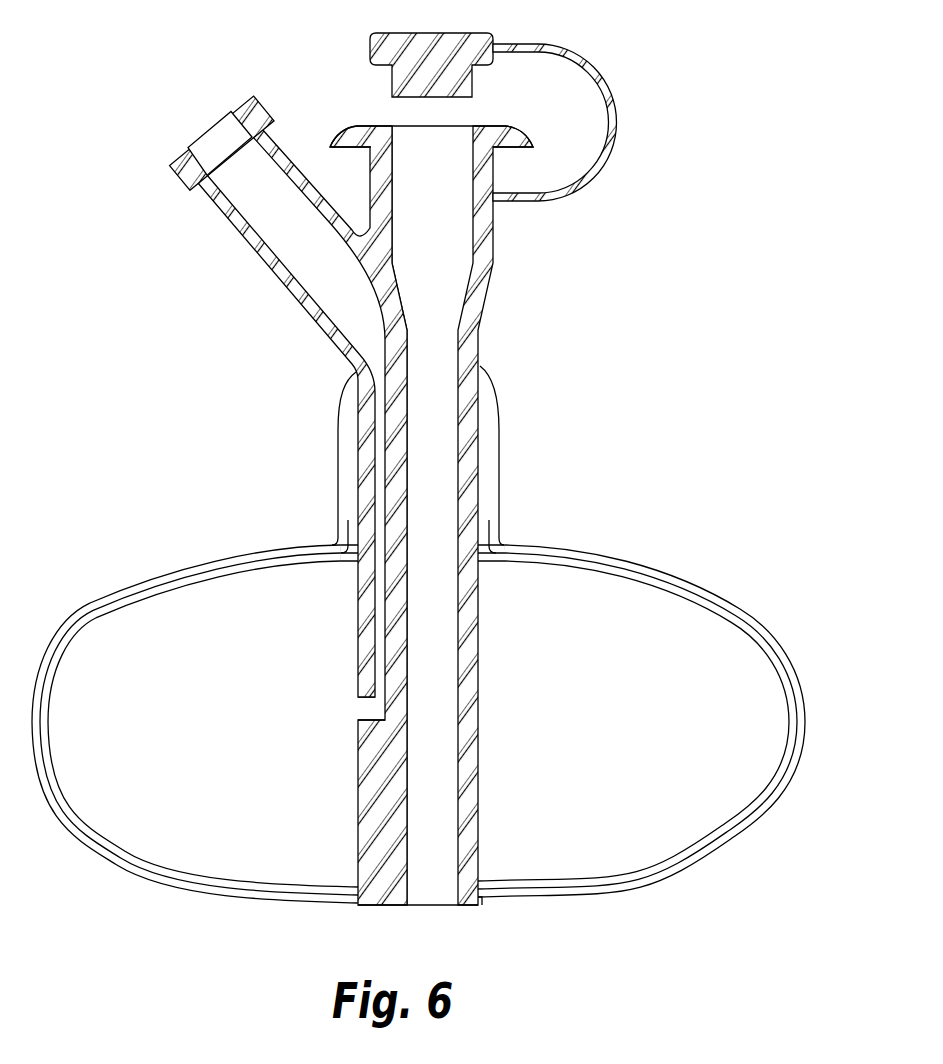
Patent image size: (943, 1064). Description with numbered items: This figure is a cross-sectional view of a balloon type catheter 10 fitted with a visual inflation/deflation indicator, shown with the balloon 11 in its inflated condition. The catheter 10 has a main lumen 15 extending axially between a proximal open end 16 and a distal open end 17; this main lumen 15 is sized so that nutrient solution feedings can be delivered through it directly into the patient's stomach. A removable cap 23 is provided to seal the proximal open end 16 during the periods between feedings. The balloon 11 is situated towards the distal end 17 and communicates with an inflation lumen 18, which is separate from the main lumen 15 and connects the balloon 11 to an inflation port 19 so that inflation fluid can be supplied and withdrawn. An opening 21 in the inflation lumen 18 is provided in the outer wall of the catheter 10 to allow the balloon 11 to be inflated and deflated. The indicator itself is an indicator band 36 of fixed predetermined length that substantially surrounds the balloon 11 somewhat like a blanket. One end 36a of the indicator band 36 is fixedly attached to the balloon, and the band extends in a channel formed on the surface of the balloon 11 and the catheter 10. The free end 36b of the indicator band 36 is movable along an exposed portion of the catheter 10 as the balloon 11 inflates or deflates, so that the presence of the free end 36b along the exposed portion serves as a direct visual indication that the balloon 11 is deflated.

The catheter 10 is at (672, 219).
The balloon 11 is at (84, 808).
The main lumen 15 is at (458, 372).
The proximal open end 16 is at (405, 126).
The distal open end 17 is at (415, 906).
The inflation lumen 18 is at (257, 250).
The inflation port 19 is at (218, 125).
The opening 21 is at (358, 702).
The removable cap 23 is at (443, 82).
The indicator band 36 is at (93, 598).
The end 36a is at (483, 906).
The free end 36b is at (492, 523).